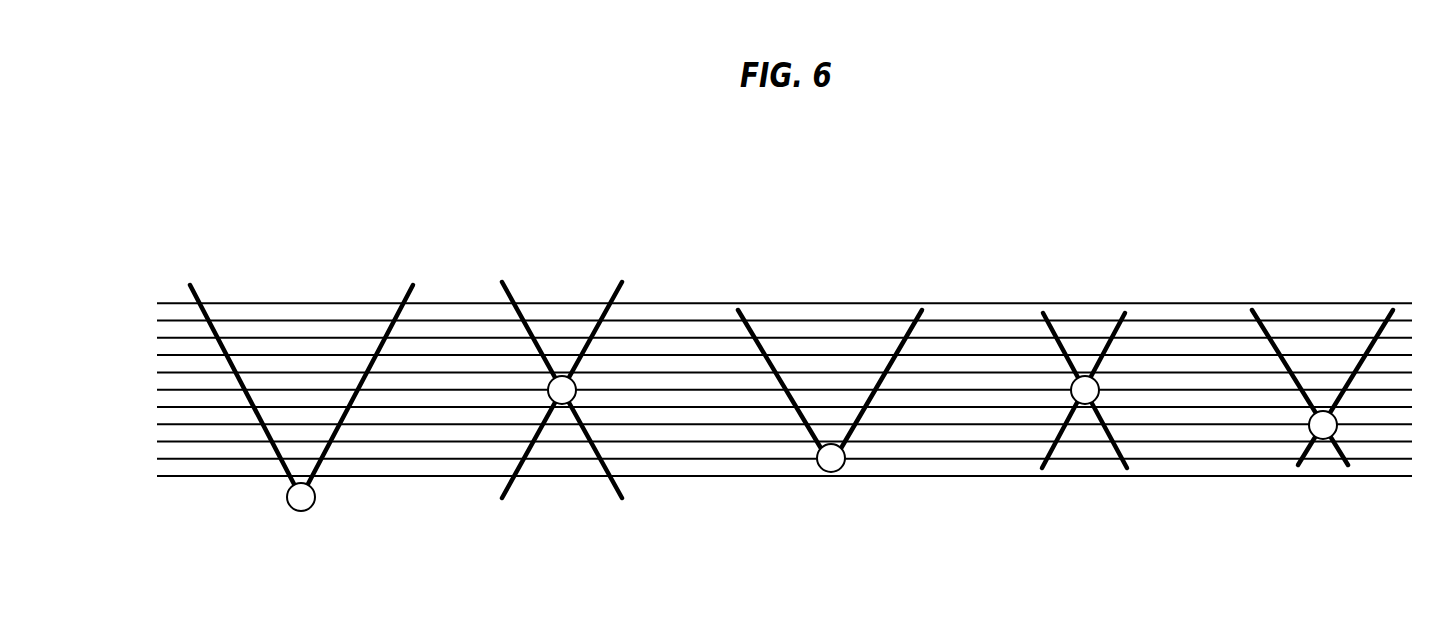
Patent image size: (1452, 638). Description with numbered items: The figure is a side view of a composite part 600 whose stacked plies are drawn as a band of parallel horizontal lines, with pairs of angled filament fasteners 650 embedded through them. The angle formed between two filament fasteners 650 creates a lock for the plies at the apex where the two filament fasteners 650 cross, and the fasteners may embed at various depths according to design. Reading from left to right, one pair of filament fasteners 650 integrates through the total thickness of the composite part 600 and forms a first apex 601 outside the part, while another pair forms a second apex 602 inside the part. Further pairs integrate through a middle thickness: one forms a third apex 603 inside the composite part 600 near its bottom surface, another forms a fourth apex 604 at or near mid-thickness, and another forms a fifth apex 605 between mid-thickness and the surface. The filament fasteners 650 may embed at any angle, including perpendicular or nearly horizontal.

The composite part 600 is at (995, 300).
The first apex 601 is at (311, 519).
The second apex 602 is at (564, 409).
The third apex 603 is at (843, 474).
The fourth apex 604 is at (1086, 409).
The fifth apex 605 is at (1324, 444).
The filament fasteners 650 is at (197, 298).